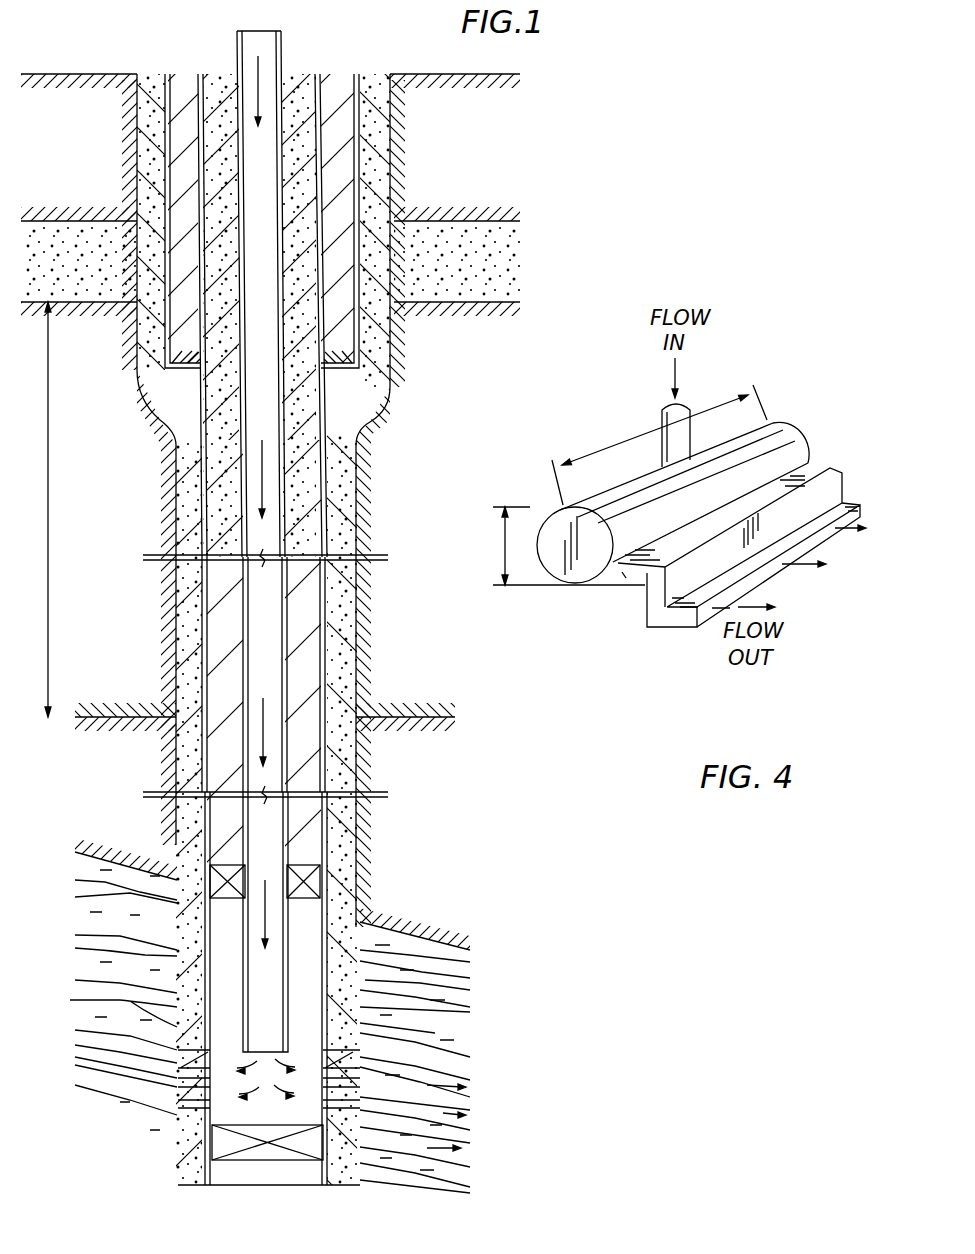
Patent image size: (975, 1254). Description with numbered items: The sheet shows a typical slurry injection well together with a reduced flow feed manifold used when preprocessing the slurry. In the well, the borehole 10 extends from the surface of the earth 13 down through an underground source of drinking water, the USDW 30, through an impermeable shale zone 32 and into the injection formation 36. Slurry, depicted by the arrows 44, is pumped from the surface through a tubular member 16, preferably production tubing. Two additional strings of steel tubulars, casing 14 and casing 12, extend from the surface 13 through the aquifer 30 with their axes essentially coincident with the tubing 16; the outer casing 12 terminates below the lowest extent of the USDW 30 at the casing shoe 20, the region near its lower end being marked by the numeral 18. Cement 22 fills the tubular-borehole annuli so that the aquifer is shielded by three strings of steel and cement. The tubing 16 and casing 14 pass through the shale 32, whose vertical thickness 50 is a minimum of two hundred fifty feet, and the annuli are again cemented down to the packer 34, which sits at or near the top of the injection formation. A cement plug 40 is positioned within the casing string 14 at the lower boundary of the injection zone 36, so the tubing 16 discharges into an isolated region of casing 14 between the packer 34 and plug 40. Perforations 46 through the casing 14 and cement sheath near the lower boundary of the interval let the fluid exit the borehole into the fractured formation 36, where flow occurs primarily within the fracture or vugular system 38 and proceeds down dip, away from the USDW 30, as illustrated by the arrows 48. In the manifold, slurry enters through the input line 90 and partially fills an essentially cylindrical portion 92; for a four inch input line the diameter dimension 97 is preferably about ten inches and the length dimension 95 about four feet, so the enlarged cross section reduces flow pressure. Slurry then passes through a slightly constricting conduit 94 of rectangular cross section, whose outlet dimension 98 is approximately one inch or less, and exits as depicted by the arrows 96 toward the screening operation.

In FIG. 1, the borehole 10 is at (174, 484).
In FIG. 1, the casing 12 is at (373, 221).
In FIG. 1, the surface of the earth 13 is at (70, 74).
In FIG. 1, the casing 14 is at (323, 176).
In FIG. 1, the tubular member 16 is at (283, 60).
In FIG. 1, the casing shoe 18 is at (139, 389).
In FIG. 1, the casing shoe 20 is at (365, 375).
In FIG. 1, the cement 22 is at (218, 183).
In FIG. 1, the USDW 30 is at (88, 292).
In FIG. 1, the impermeable shale zone 32 is at (151, 661).
In FIG. 1, the packer 34 is at (315, 880).
In FIG. 1, the injection formation 36 is at (462, 1031).
In FIG. 1, the fractures 38 is at (93, 945).
In FIG. 1, the cement plug 40 is at (221, 1145).
In FIG. 1, the arrows depicting slurry 44 is at (265, 727).
In FIG. 1, the perforations 46 is at (304, 1097).
In FIG. 1, the arrows 48 is at (443, 1101).
In FIG. 1, the vertical thickness 50 is at (48, 527).
In FIG. 4, the input line 90 is at (662, 438).
In FIG. 4, the cylindrical portion 92 is at (792, 437).
In FIG. 4, the constricting conduit 94 is at (650, 575).
In FIG. 4, the dimension 95 is at (587, 453).
In FIG. 4, the arrows 96 is at (810, 566).
In FIG. 4, the dimension 97 is at (500, 543).
In FIG. 4, the dimension 98 is at (627, 575).